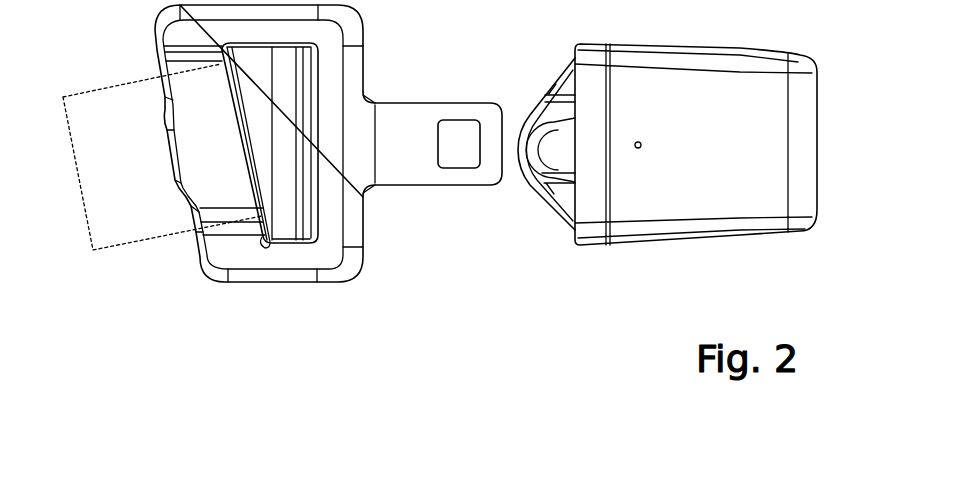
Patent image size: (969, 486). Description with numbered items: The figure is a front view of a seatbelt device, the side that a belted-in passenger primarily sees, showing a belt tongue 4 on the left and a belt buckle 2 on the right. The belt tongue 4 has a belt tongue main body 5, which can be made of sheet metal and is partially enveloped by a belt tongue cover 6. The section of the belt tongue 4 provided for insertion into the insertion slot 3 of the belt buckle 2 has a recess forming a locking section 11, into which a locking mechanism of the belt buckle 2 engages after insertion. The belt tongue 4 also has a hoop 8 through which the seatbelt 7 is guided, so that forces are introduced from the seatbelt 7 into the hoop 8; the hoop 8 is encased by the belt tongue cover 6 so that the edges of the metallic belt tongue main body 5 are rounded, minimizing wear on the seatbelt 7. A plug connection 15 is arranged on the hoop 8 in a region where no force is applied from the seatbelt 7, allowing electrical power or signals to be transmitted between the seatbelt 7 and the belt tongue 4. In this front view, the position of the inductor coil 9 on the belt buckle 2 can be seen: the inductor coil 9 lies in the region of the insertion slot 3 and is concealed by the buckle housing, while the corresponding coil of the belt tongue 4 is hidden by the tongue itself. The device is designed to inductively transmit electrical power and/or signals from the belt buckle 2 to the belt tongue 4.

The belt buckle 2 is at (687, 185).
The insertion slot 3 is at (556, 124).
The belt tongue 4 is at (392, 250).
The belt tongue main body 5 is at (407, 153).
The belt tongue cover 6 is at (297, 258).
The seatbelt 7 is at (167, 208).
The hoop 8 is at (228, 207).
The inductor coil 9 is at (548, 150).
The locking section 11 is at (462, 135).
The plug connection 15 is at (165, 163).